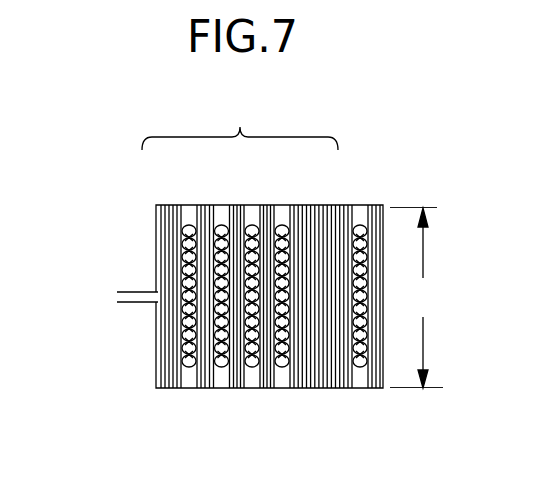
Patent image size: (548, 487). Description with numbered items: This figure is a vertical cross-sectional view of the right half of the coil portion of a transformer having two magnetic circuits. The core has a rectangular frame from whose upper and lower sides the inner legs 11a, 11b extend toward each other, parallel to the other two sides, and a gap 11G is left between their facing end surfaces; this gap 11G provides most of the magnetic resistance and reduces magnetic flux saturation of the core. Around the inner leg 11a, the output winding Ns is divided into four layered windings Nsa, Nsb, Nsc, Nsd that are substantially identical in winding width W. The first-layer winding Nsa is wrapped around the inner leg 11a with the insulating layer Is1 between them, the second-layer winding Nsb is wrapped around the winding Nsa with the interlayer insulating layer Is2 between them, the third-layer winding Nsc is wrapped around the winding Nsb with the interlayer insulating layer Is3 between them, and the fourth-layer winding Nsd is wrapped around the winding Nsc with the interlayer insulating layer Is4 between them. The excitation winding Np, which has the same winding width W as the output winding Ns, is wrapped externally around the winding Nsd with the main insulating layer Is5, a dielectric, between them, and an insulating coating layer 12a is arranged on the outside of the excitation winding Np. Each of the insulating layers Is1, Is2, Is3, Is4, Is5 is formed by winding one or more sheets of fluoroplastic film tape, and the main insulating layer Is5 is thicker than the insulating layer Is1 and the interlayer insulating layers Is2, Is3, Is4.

The output winding Ns is at (240, 124).
The winding Nsa is at (189, 226).
The winding Nsb is at (222, 226).
The winding Nsc is at (252, 226).
The winding Nsd is at (282, 226).
The excitation winding Np is at (360, 226).
The inner leg 11a is at (145, 361).
The inner leg 11b is at (145, 260).
The gap 11G is at (117, 297).
The insulating layer Is1 is at (157, 388).
The interlayer insulating layer Is2 is at (205, 389).
The interlayer insulating layer Is3 is at (236, 389).
The interlayer insulating layer Is4 is at (268, 389).
The main insulating layer Is5 is at (312, 389).
The insulating coating layer 12a is at (373, 389).
The winding width W is at (416, 298).